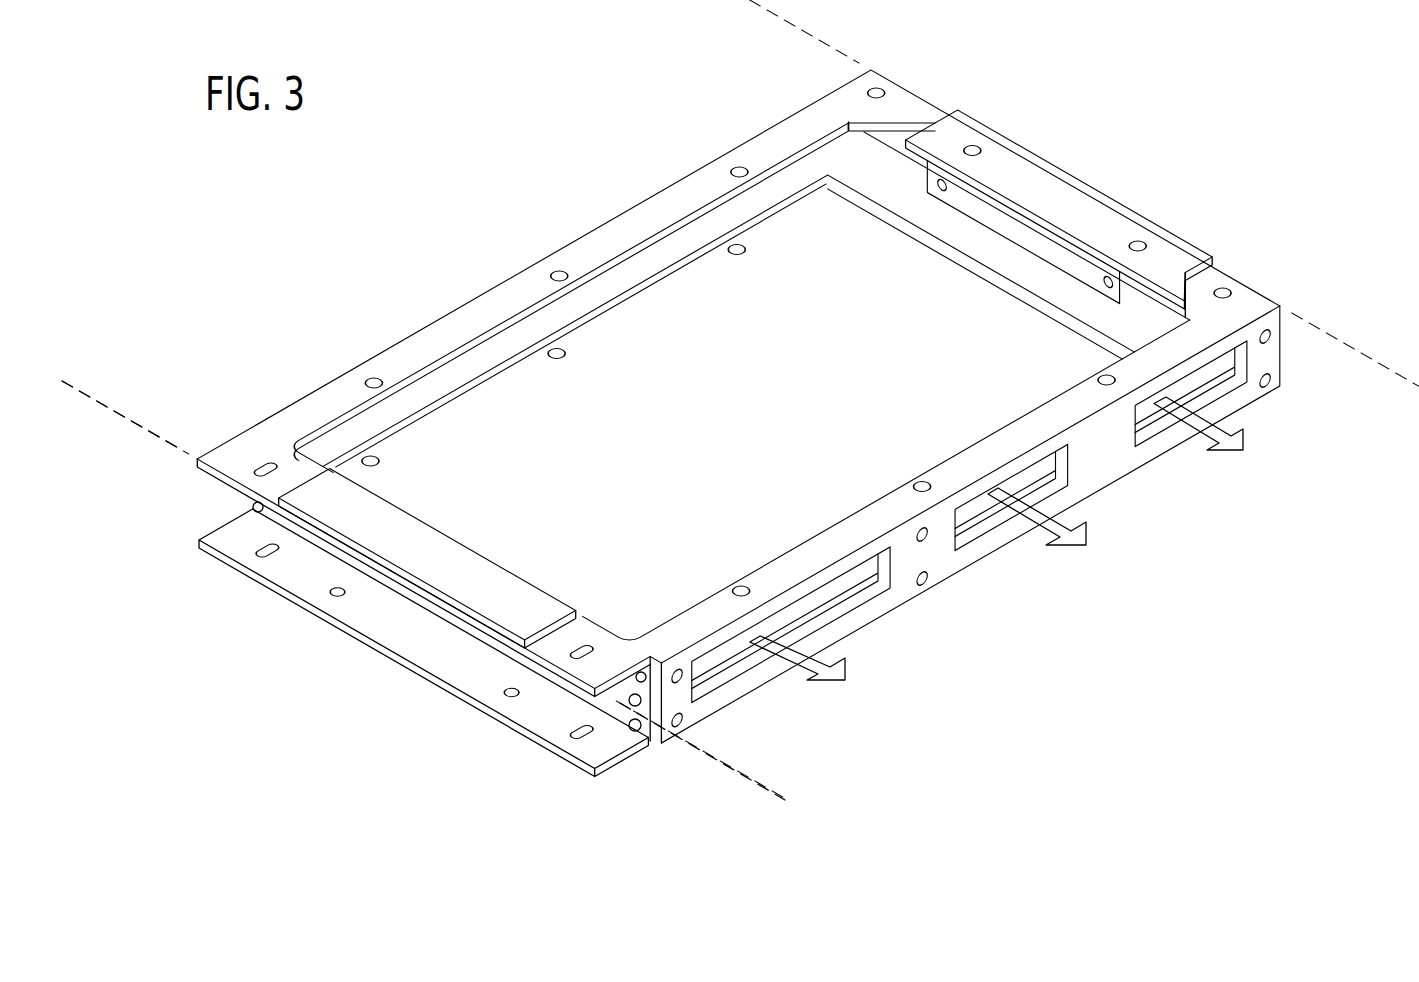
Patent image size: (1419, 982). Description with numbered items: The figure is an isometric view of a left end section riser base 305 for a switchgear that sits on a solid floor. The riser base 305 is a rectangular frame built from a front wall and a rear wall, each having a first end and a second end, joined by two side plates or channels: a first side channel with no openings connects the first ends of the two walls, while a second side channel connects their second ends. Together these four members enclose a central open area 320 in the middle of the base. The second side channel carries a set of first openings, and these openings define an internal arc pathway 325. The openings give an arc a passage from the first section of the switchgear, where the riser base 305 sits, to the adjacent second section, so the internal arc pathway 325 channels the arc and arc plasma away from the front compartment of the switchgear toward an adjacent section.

The left end section riser base 305 is at (414, 187).
The central open area 320 is at (721, 314).
The internal arc pathway 325 is at (832, 682).